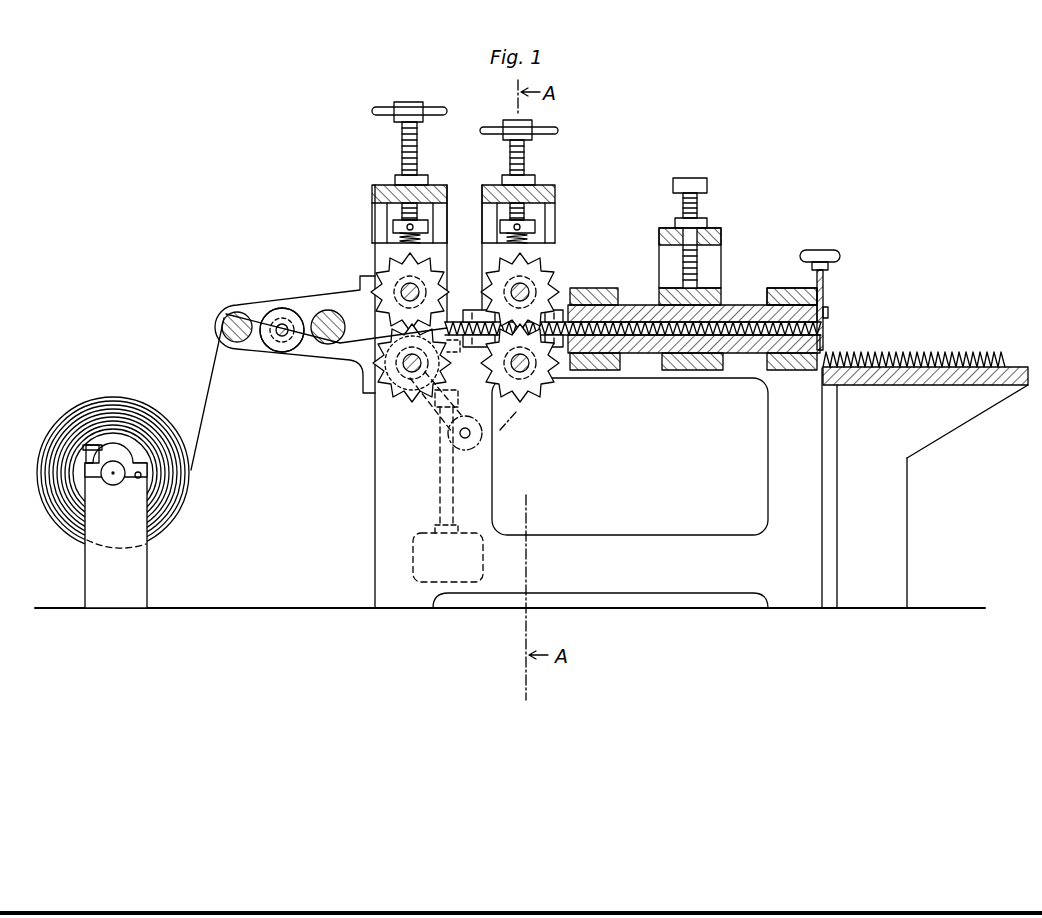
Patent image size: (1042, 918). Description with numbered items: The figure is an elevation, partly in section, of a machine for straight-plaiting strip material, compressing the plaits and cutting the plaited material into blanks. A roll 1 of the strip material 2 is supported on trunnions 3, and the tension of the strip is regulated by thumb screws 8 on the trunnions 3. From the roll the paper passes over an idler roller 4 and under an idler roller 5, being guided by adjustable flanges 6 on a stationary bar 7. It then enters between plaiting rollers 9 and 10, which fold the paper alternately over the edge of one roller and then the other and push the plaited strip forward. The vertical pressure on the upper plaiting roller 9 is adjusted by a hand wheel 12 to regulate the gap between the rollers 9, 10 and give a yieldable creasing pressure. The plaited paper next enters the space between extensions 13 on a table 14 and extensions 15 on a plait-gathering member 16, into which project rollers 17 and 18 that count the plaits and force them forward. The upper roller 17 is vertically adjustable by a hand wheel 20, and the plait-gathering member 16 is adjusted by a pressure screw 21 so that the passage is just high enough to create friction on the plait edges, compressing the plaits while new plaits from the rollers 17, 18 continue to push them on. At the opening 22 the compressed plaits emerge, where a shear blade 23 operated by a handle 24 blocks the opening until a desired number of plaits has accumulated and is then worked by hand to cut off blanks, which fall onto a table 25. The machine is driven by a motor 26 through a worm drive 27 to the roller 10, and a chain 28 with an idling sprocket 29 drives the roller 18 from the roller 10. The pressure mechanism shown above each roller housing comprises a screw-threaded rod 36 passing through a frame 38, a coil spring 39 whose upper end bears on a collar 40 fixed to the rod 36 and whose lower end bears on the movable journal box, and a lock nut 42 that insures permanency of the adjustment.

The roll 1 is at (118, 398).
The strip material 2 is at (205, 407).
The trunnions 3 is at (135, 579).
The idler roller 4 is at (234, 308).
The idler roller 5 is at (328, 342).
The adjustable flanges 6 is at (285, 310).
The stationary bar 7 is at (283, 340).
The thumb screws 8 is at (85, 453).
The plaiting roller 9 is at (430, 282).
The plaiting roller 10 is at (398, 392).
The hand wheel 12 is at (372, 120).
The extensions 13 is at (466, 350).
The table 14 is at (650, 354).
The extensions 15 is at (468, 312).
The plait-gathering member 16 is at (645, 320).
The roller 17 is at (550, 287).
The roller 18 is at (558, 385).
The hand wheel 20 is at (558, 131).
The pressure screw 21 is at (707, 186).
The opening 22 is at (808, 305).
The shear blade 23 is at (823, 292).
The handle 24 is at (840, 257).
The table 25 is at (940, 425).
The motor 26 is at (418, 553).
The worm drive 27 is at (432, 405).
The chain 28 is at (505, 422).
The idling sprocket 29 is at (482, 449).
The screw-threaded rod 36 is at (418, 164).
The frame 38 is at (372, 195).
The coil spring 39 is at (398, 240).
The collar 40 is at (393, 228).
The lock nut 42 is at (395, 181).